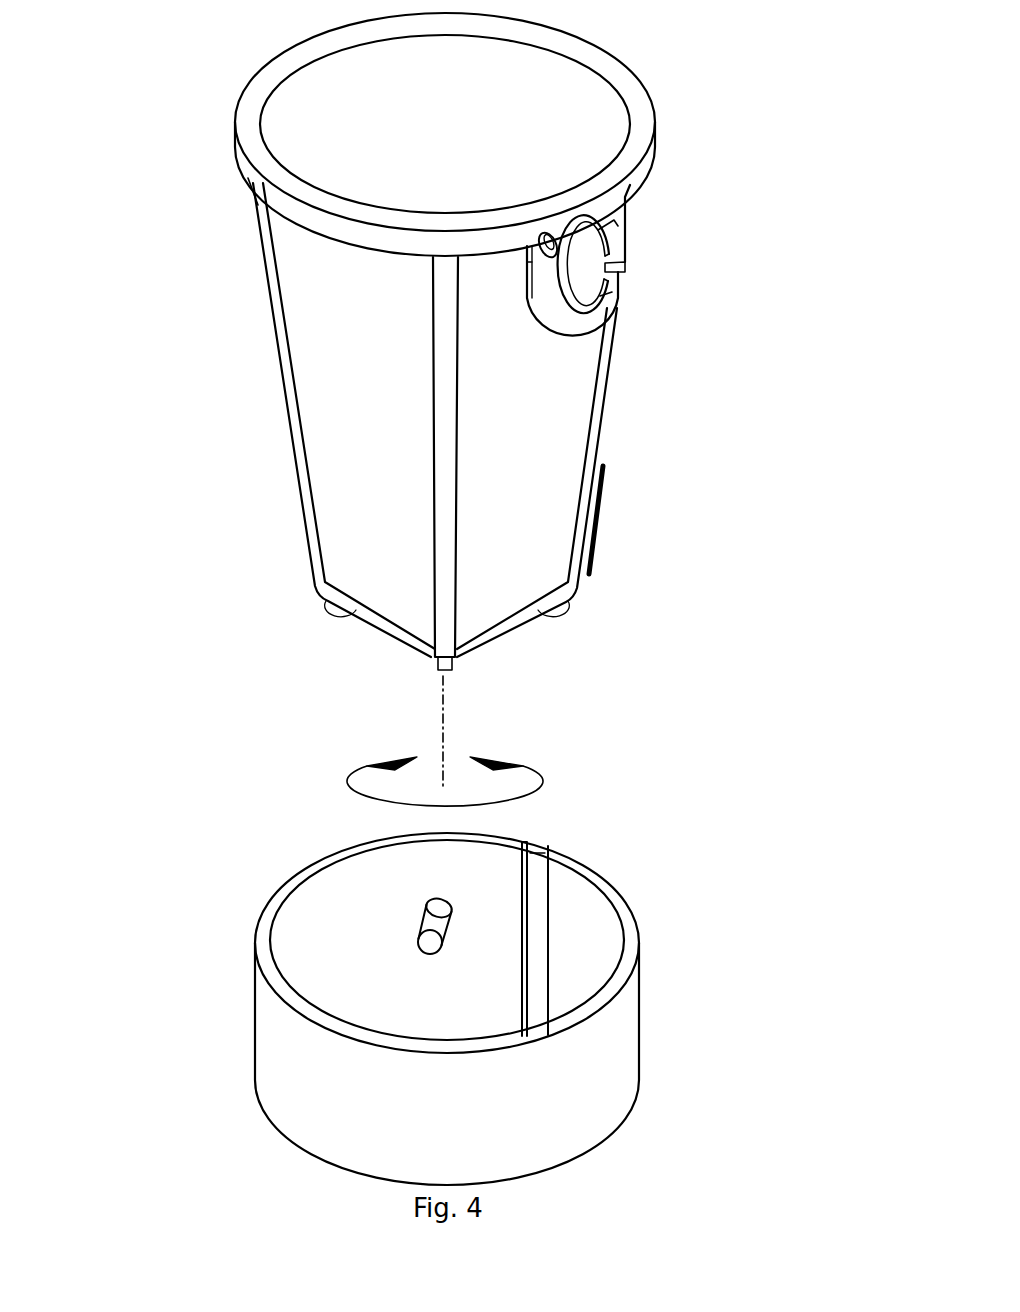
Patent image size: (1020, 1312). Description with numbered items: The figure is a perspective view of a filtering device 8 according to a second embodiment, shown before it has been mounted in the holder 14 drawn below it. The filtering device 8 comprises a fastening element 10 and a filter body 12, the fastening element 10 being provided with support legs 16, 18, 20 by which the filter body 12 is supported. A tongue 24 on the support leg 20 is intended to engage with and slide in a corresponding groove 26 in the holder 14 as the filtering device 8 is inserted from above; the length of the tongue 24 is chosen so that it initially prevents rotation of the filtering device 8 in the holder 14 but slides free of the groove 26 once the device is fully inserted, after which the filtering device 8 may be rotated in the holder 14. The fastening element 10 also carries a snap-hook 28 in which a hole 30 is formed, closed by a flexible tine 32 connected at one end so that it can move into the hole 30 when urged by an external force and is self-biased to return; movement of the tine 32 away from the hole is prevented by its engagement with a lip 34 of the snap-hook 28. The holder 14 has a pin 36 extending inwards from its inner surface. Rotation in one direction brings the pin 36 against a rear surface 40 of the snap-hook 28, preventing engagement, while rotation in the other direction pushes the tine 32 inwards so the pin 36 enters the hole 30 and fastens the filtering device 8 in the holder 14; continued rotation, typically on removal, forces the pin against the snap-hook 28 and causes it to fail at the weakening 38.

The filtering device 8 is at (168, 158).
The fastening element 10 is at (636, 92).
The filter body 12 is at (379, 394).
The holder 14 is at (639, 1028).
The support leg 16 is at (438, 583).
The support leg 18 is at (296, 472).
The support leg 20 is at (607, 402).
The tongue 24 is at (593, 533).
The groove 26 is at (536, 855).
The snap-hook 28 is at (549, 297).
The hole 30 is at (585, 278).
The flexible tine 32 is at (617, 243).
The lip 34 is at (617, 275).
The pin 36 is at (430, 918).
The weakening 38 is at (542, 236).
The rear surface 40 is at (527, 267).